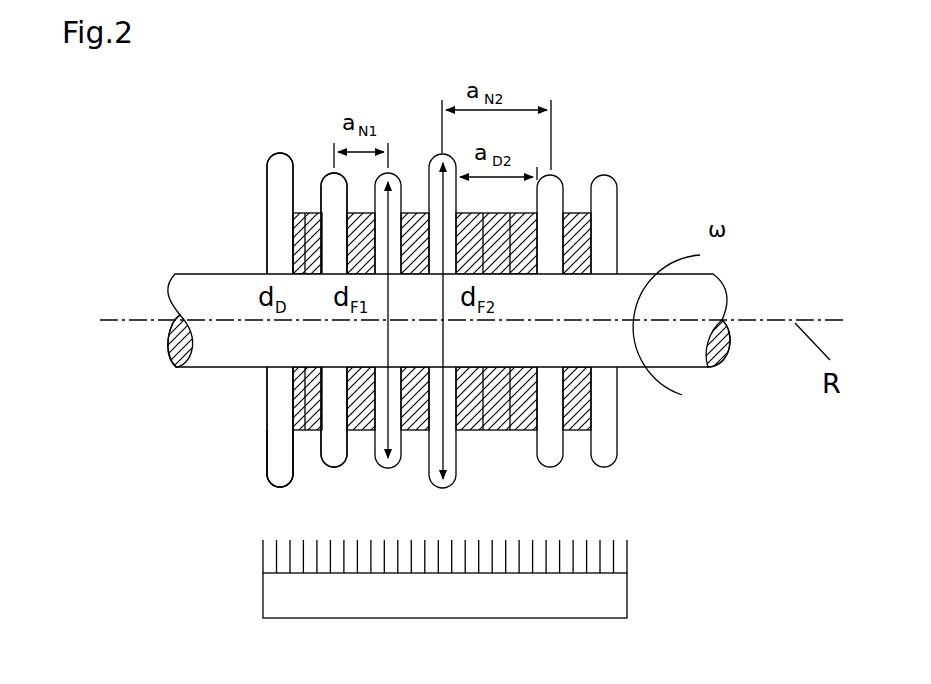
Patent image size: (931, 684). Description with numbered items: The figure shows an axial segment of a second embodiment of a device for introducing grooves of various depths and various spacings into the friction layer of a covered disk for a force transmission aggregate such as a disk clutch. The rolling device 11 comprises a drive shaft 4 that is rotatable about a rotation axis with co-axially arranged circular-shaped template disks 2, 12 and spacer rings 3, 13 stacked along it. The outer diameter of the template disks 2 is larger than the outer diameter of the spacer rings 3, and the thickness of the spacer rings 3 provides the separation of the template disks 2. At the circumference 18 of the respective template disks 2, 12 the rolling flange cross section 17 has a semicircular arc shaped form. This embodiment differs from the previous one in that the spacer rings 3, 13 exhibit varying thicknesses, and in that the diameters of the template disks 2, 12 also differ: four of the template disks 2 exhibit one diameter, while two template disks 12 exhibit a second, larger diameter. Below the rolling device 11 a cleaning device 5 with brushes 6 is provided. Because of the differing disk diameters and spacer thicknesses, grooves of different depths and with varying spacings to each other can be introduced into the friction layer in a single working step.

The template disk 2 is at (335, 452).
The spacer ring 3 is at (592, 228).
The drive shaft 4 is at (212, 348).
The cleaning device 5 is at (608, 593).
The brushes 6 is at (580, 552).
The rolling device 11 is at (635, 152).
The template disk 12 is at (280, 218).
The spacer ring 13 is at (527, 212).
The rolling flange cross section 17 is at (277, 188).
The circumference 18 is at (279, 490).